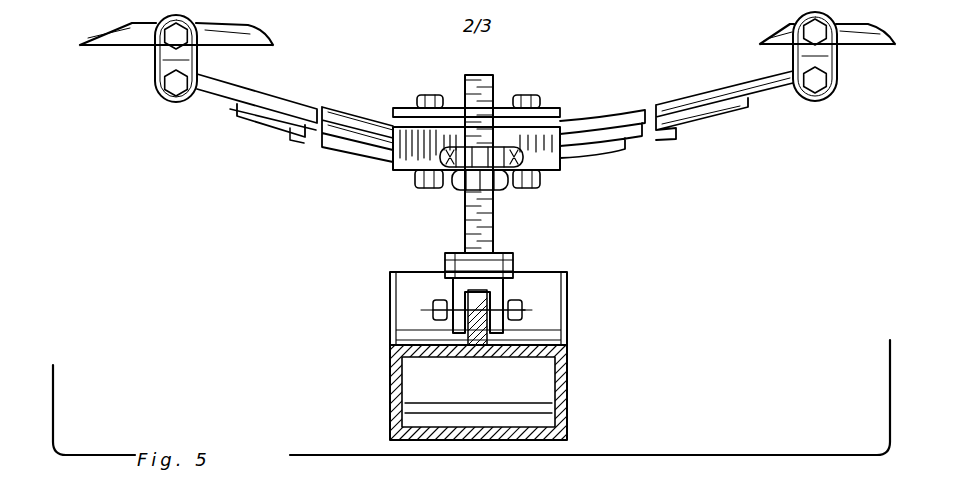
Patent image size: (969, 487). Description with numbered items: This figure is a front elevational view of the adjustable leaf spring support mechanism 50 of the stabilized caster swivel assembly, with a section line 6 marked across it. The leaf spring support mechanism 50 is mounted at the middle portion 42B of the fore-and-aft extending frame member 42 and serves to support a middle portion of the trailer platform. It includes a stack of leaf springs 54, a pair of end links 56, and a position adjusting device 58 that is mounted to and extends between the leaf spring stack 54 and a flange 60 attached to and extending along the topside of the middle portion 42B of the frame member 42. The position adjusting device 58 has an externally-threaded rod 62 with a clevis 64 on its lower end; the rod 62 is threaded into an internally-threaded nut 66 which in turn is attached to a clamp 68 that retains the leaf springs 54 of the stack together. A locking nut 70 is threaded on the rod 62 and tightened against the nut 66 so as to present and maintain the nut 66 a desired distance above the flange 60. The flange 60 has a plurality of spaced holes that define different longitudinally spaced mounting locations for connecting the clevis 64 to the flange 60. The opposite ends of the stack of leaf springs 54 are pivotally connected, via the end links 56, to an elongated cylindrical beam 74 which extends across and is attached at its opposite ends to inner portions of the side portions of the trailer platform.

The section line 6- 6 is at (521, 50).
The frame member 42 is at (571, 297).
The middle portion of the frame member 42B is at (570, 413).
The leaf spring support mechanism 50 is at (603, 212).
The stack of leaf springs 54 is at (664, 105).
The end links 56 is at (160, 66).
The position adjusting device 58 is at (434, 283).
The flange 60 is at (489, 352).
The externally-threaded rod 62 is at (482, 225).
The clevis 64 is at (513, 296).
The internally-threaded nut 66 is at (502, 147).
The clamp 68 is at (398, 158).
The locking nut 70 is at (450, 190).
The elongated cylindrical beam 74 is at (250, 46).